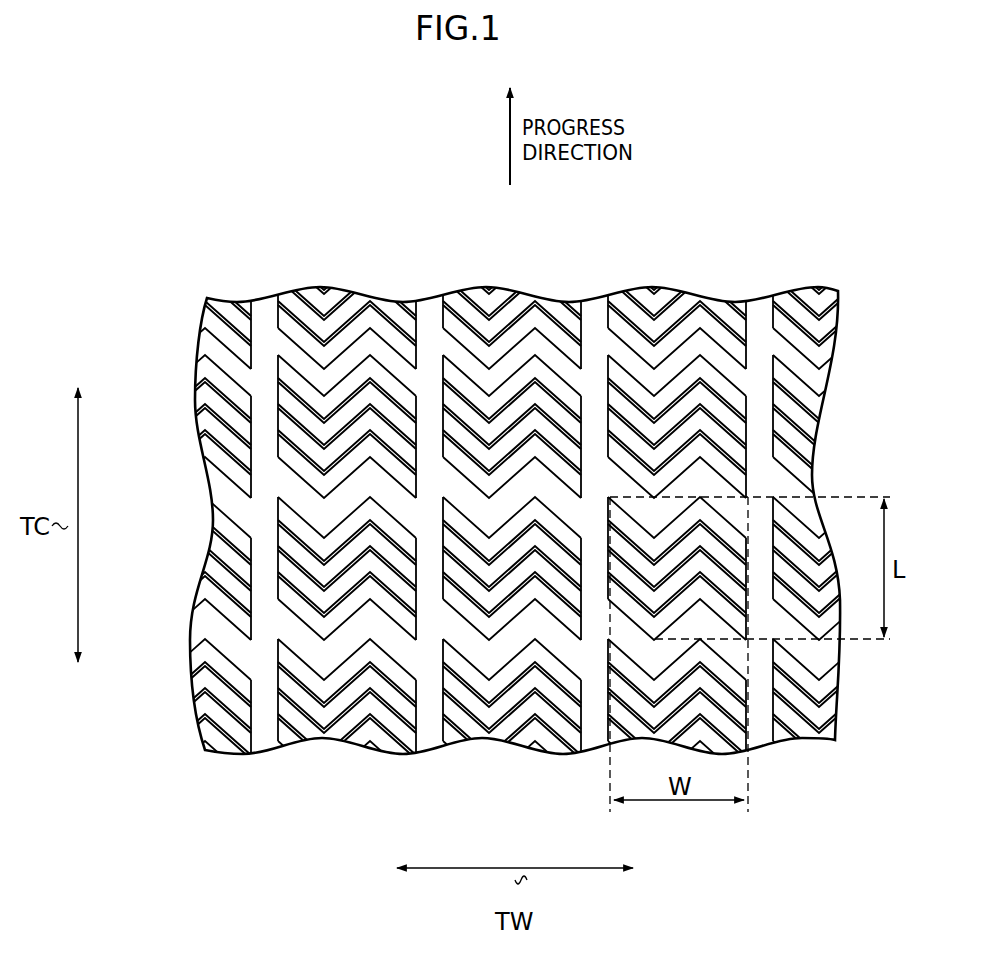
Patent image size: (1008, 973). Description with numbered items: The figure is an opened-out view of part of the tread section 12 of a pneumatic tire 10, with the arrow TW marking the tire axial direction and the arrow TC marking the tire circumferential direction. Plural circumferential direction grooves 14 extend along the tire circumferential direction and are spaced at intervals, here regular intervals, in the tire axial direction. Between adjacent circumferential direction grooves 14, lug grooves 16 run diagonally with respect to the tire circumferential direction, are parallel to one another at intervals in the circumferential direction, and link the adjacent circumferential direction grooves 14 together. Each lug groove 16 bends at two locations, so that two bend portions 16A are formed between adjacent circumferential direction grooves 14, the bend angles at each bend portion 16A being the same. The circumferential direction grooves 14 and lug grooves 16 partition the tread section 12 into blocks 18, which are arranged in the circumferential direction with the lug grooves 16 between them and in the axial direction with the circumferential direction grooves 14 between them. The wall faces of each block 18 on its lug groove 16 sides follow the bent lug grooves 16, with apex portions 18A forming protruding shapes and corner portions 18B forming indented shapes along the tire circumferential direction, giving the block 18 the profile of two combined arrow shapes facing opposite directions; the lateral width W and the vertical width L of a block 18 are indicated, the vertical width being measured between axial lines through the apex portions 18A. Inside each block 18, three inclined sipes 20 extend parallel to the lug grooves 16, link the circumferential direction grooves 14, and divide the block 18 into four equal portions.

The pneumatic tire 10 is at (767, 152).
The tread section 12 is at (795, 283).
The circumferential direction groove 14 is at (262, 312).
The lug groove 16 is at (222, 350).
The bend portion 16A is at (326, 374).
The block 18 is at (431, 371).
The apex portion 18A is at (600, 472).
The corner portion 18B is at (641, 395).
The inclined sipe 20 is at (785, 418).